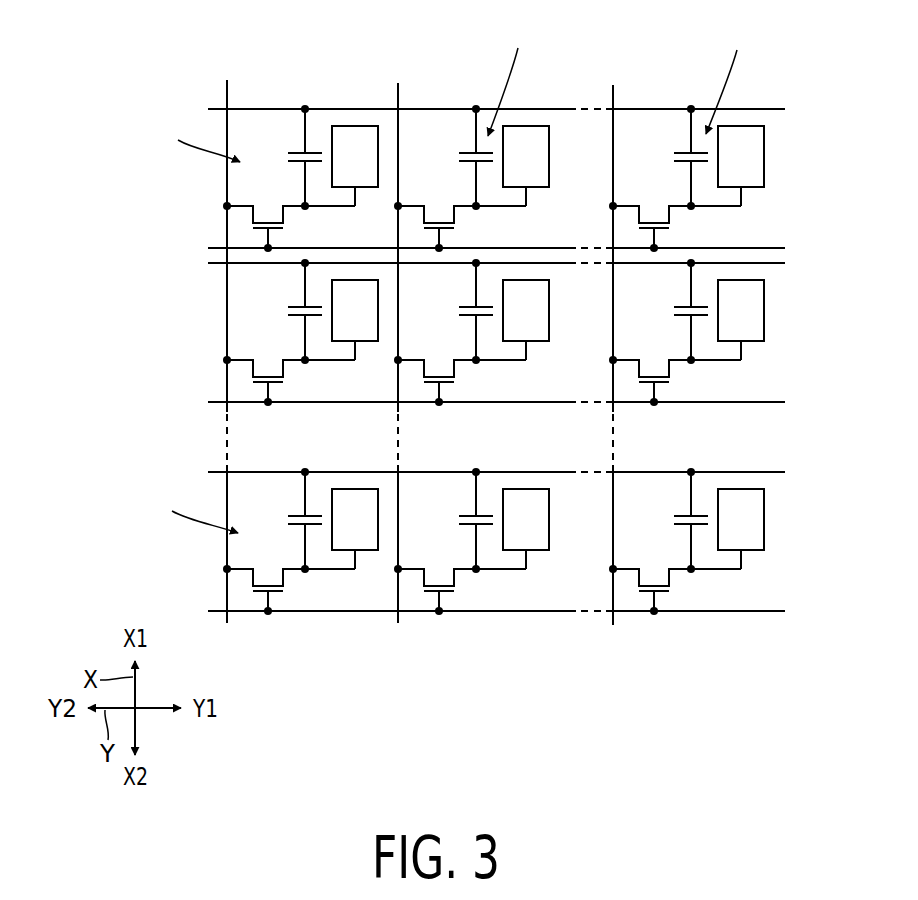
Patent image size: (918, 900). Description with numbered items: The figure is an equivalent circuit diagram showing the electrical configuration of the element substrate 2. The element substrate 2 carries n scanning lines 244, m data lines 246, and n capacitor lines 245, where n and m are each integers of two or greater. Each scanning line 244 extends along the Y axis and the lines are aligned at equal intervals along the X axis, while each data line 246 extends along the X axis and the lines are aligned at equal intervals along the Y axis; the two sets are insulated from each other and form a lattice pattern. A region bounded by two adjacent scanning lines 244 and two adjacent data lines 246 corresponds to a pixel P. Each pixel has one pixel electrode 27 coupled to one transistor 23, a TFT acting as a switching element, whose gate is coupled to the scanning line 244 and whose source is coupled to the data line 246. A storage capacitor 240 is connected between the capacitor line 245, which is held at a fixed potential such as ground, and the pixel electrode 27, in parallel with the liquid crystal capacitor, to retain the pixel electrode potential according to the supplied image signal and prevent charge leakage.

The element substrate 2 is at (784, 76).
The transistor 23 is at (298, 228).
The pixel electrode 27 is at (354, 125).
The storage capacitor 240 is at (283, 158).
The scanning line 244 is at (222, 246).
The capacitor line 245 is at (222, 107).
The data line 246 is at (228, 100).